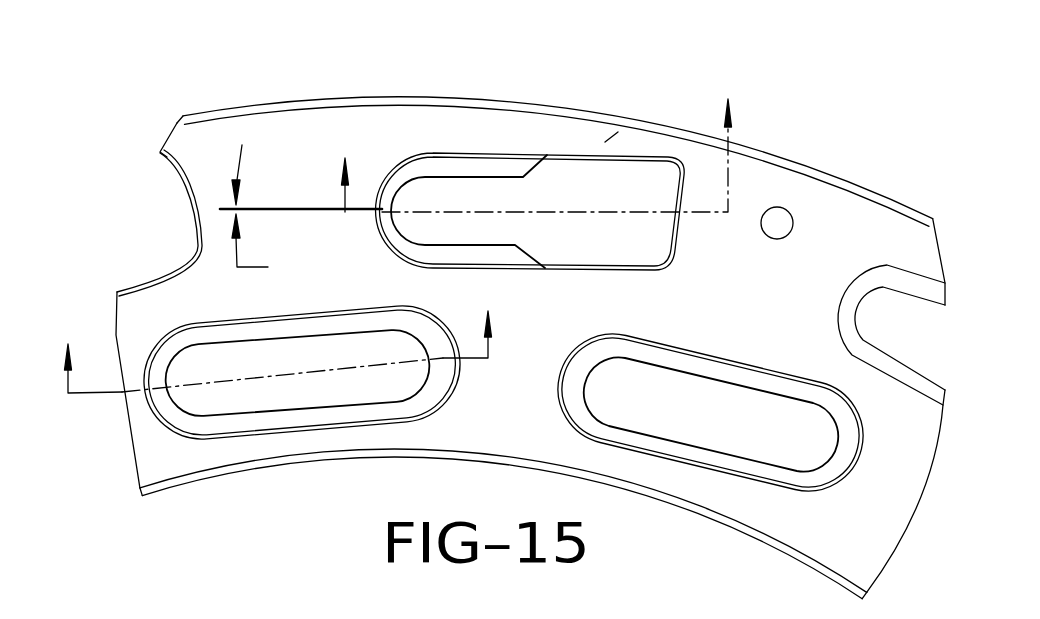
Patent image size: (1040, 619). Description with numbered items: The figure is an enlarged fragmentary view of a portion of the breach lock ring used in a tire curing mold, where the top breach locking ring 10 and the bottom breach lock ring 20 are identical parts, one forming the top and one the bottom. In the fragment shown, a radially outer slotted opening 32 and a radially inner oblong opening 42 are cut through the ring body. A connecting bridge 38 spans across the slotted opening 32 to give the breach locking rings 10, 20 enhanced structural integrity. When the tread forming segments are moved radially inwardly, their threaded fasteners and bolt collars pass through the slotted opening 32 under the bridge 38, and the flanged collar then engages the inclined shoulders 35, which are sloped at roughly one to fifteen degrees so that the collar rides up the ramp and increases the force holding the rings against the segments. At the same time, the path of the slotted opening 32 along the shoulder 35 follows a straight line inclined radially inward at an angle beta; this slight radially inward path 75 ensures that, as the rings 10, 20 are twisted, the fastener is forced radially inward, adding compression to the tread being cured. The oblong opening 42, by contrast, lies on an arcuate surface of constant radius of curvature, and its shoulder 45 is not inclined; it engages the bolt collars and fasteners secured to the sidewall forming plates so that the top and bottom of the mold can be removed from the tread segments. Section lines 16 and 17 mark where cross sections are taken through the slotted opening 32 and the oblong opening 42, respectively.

The top breach locking ring 10 is at (530, 299).
The bottom breach lock ring 20 is at (214, 131).
The radially inward path 75 is at (274, 200).
The section line 16- 16 is at (538, 137).
The section line 17- 17 is at (273, 334).
The inclined shoulder 35 is at (458, 170).
The slotted opening 32 is at (586, 193).
The connecting bridge 38 is at (628, 123).
The oblong opening 42 is at (722, 434).
The shoulder 45 is at (772, 486).